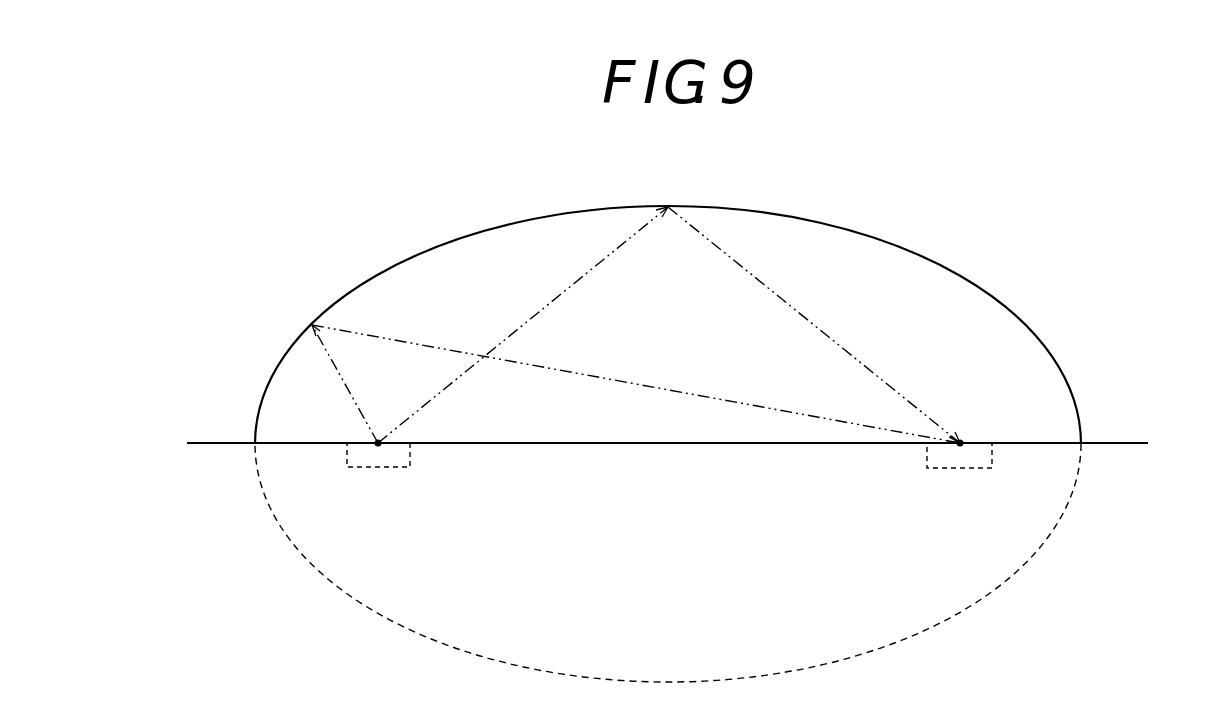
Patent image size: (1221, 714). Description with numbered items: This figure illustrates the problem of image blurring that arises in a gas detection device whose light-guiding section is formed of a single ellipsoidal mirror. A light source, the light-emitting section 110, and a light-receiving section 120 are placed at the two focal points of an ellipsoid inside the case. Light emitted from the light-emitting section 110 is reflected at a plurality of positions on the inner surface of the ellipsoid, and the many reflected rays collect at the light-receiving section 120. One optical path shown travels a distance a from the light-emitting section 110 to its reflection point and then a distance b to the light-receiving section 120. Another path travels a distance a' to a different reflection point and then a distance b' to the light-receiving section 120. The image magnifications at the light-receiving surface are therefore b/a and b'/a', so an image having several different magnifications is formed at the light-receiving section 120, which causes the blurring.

The light-emitting section 110 is at (378, 467).
The light-receiving section 120 is at (960, 468).
The distance a is at (345, 384).
The distance a' is at (523, 325).
The distance b is at (636, 384).
The distance b' is at (814, 325).